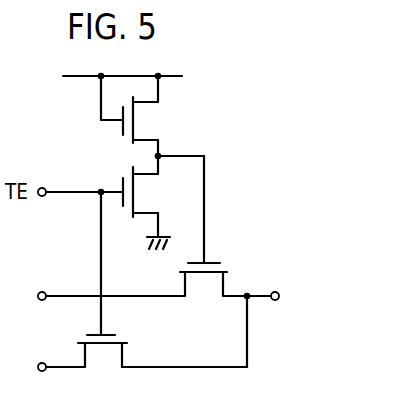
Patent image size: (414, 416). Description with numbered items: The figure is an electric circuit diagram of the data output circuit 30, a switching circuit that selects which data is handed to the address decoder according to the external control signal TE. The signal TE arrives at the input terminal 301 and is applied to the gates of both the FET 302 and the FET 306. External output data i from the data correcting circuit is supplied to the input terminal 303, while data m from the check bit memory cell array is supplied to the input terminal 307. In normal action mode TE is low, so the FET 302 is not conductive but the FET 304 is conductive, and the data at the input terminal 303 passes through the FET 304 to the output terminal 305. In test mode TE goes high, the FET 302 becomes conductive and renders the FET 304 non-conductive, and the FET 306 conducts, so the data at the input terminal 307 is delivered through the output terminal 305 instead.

The data output circuit 30 is at (222, 75).
The input terminal 301 is at (44, 188).
The FET 302 is at (134, 188).
The input terminal 303 is at (43, 291).
The FET 304 is at (209, 262).
The output terminal 305 is at (279, 292).
The FET 306 is at (107, 333).
The input terminal 307 is at (43, 362).